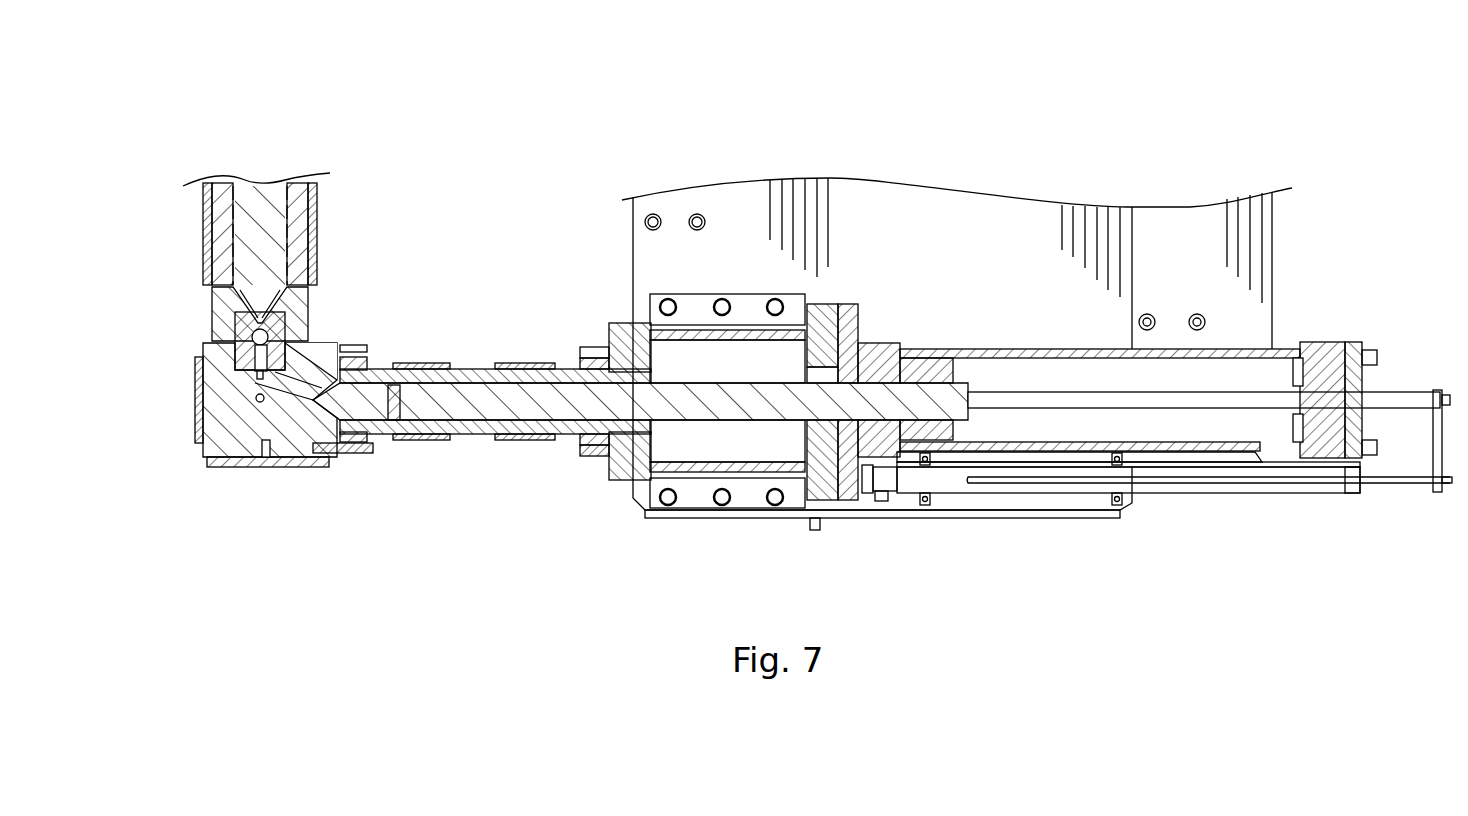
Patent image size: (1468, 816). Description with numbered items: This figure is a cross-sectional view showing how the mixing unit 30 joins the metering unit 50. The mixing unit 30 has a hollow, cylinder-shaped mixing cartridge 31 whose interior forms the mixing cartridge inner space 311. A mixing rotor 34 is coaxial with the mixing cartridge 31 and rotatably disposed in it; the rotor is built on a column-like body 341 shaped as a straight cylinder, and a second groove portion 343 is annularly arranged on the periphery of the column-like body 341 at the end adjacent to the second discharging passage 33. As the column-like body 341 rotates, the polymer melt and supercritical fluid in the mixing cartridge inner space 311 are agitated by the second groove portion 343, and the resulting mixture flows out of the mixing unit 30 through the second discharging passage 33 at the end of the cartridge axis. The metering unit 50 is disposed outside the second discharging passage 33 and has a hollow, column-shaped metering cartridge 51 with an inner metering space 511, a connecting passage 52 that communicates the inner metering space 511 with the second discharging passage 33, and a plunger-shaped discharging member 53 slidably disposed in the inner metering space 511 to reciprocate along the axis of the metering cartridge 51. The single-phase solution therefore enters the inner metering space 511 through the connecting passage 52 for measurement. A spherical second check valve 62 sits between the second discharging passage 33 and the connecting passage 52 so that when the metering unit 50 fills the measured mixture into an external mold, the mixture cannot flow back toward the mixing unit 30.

The mixing unit 30 is at (267, 165).
The mixing cartridge 31 is at (223, 243).
The mixing cartridge inner space 311 is at (230, 199).
The second discharging passage 33 is at (236, 318).
The mixing rotor 34 is at (274, 242).
The column-like body 341 is at (268, 200).
The second groove portion 343 is at (246, 198).
The metering unit 50 is at (1325, 316).
The metering cartridge 51 is at (486, 430).
The inner metering space 511 is at (375, 402).
The connecting passage 52 is at (298, 394).
The discharging member 53 is at (373, 395).
The second check valve 62 is at (234, 350).